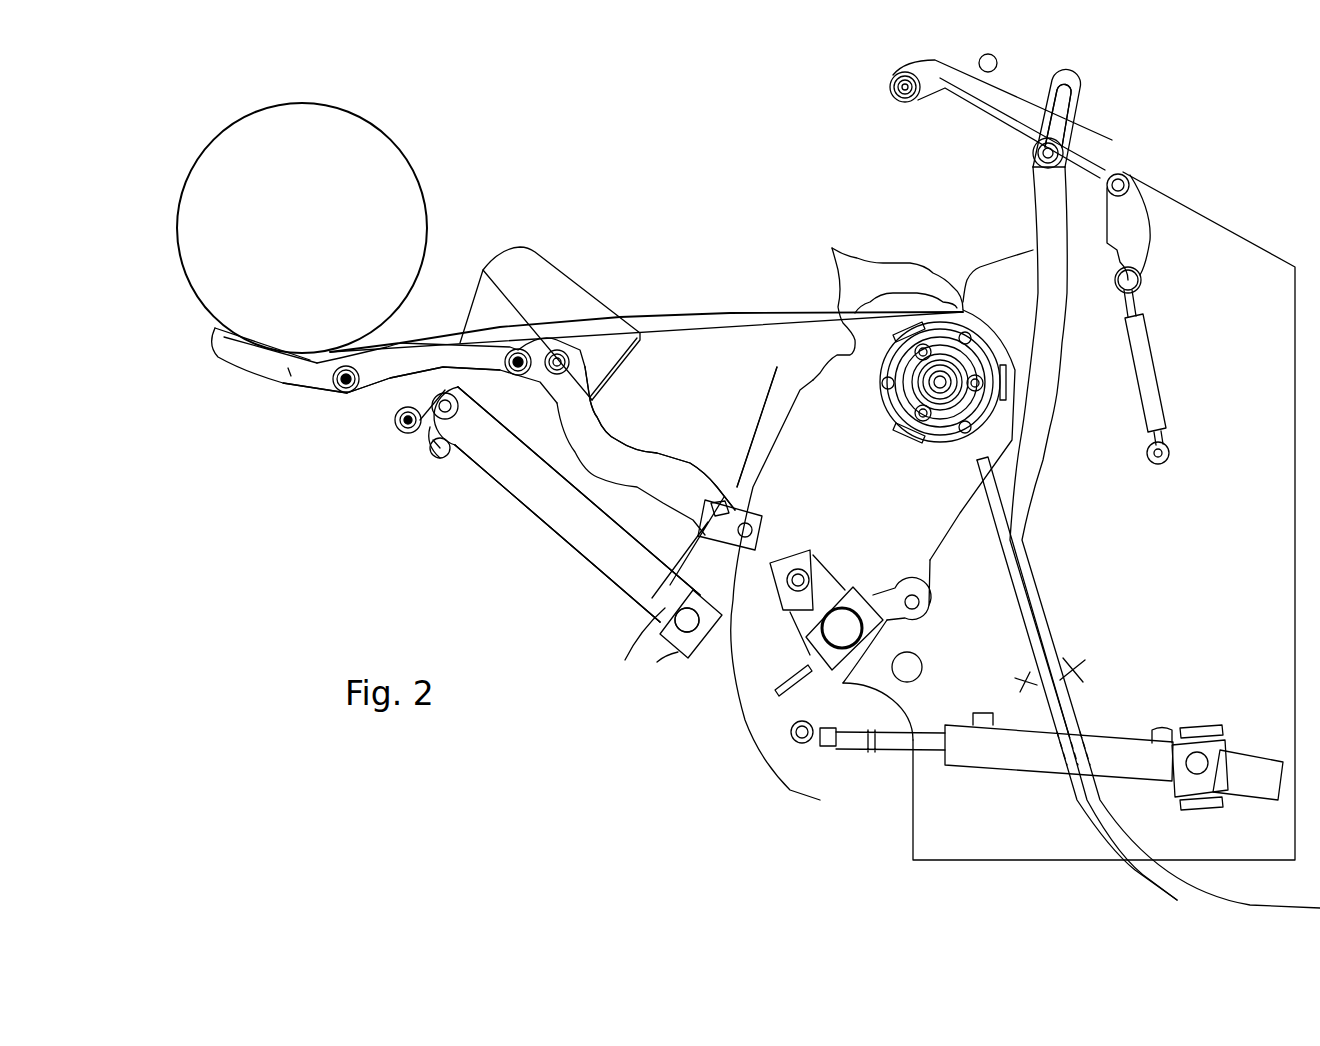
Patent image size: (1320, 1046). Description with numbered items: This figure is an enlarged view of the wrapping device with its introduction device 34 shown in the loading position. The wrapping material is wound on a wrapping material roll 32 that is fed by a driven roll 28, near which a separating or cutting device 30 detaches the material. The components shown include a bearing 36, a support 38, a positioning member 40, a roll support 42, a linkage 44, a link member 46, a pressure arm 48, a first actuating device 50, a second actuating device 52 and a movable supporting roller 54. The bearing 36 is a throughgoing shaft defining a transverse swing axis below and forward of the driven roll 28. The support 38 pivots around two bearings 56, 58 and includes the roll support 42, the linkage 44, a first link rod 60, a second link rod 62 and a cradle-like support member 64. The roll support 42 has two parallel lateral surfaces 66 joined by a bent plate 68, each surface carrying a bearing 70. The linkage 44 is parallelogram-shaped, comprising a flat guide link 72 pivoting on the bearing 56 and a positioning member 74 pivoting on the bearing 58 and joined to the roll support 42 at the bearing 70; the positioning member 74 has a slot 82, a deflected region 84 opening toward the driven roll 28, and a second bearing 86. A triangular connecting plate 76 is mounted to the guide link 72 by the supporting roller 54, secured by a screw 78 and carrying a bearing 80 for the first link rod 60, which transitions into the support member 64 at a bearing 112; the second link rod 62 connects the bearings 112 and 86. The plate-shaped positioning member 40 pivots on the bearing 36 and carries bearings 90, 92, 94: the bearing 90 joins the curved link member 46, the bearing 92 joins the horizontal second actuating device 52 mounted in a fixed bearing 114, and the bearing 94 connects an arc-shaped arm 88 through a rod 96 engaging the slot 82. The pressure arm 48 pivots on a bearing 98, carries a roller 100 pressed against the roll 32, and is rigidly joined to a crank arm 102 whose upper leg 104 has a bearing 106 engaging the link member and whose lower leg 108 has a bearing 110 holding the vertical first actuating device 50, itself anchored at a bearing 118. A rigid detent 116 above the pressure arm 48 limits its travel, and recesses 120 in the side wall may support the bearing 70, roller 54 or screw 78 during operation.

The driven roll 28 is at (900, 400).
The separating or cutting device 30 is at (1085, 653).
The wrapping material roll 32 is at (392, 157).
The introduction device 34 is at (702, 217).
The bearing 36 is at (837, 617).
The support 38 is at (397, 457).
The positioning member 40 is at (805, 748).
The roll support 42 is at (608, 308).
The linkage 44 is at (543, 608).
The link member 46 is at (1032, 397).
The pressure arm 48 is at (1003, 100).
The first actuating device 50 is at (1145, 370).
The second actuating device 52 is at (1107, 753).
The movable supporting roller 54 is at (503, 487).
The bearing 56 is at (687, 632).
The bearing 58 is at (757, 415).
The first link rod 60 is at (363, 403).
The second link rod 62 is at (423, 358).
The support member 64 is at (232, 335).
The lateral surfaces 66 is at (537, 335).
The plate 68 is at (613, 377).
The bearing 70 is at (570, 350).
The guide link 72 is at (653, 597).
The positioning member 74 is at (655, 467).
The connecting plate 76 is at (402, 435).
The screw 78 is at (432, 458).
The bearing 80 is at (400, 432).
The slot 82 is at (655, 467).
The deflected region 84 is at (607, 433).
The second bearing 86 is at (522, 352).
The arm 88 is at (733, 600).
The bearing 90 is at (923, 602).
The bearing 92 is at (812, 740).
The bearing 94 is at (667, 640).
The rod 96 is at (745, 540).
The bearing 98 is at (1127, 173).
The roller 100 is at (903, 102).
The crank arm 102 is at (1080, 182).
The upper leg 104 is at (1083, 173).
The bearing 106 is at (1033, 168).
The lower leg 108 is at (1133, 223).
The bearing 110 is at (1140, 277).
The bearing 112 is at (347, 395).
The fixed bearing 114 is at (1197, 752).
The rigid detent 116 is at (997, 65).
The bearing 118 is at (1165, 462).
The recesses 120 is at (838, 262).